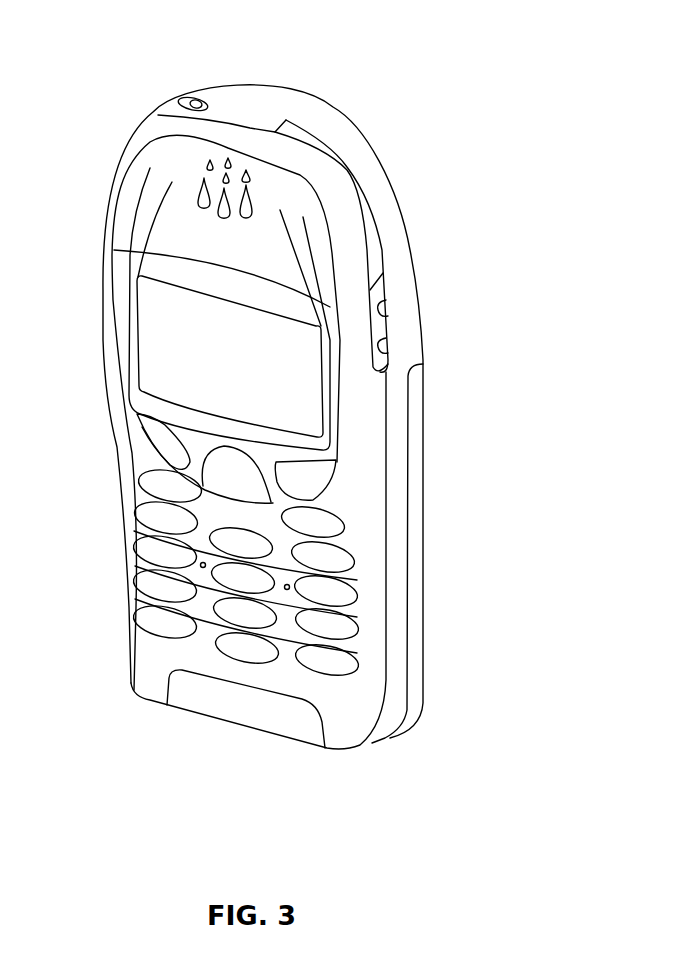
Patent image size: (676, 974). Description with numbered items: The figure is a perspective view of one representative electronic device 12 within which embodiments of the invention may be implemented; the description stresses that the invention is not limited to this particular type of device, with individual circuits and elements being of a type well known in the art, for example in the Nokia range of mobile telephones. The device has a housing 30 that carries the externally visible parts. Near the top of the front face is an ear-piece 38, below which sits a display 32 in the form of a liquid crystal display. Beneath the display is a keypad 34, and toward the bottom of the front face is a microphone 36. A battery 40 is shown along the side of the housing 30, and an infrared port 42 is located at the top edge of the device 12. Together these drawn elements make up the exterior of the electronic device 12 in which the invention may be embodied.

The electronic device 12 is at (277, 422).
The housing 30 is at (392, 218).
The display 32 is at (303, 393).
The keypad 34 is at (325, 668).
The microphone 36 is at (192, 698).
The ear-piece 38 is at (208, 182).
The battery 40 is at (417, 652).
The infrared port 42 is at (248, 112).